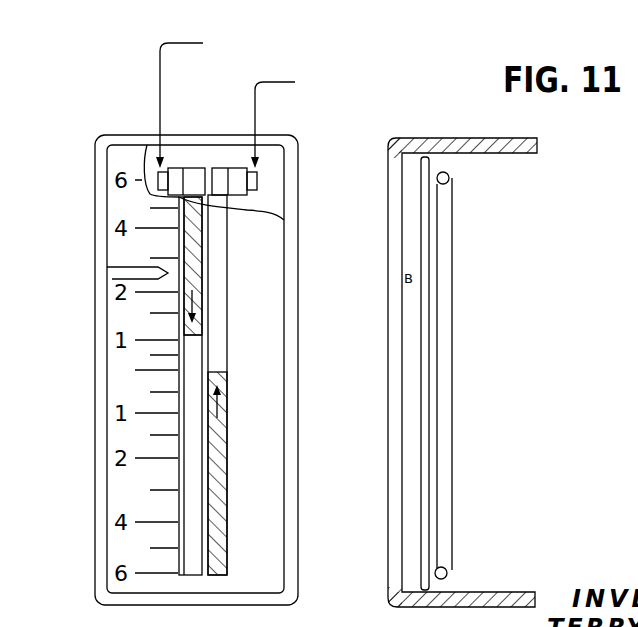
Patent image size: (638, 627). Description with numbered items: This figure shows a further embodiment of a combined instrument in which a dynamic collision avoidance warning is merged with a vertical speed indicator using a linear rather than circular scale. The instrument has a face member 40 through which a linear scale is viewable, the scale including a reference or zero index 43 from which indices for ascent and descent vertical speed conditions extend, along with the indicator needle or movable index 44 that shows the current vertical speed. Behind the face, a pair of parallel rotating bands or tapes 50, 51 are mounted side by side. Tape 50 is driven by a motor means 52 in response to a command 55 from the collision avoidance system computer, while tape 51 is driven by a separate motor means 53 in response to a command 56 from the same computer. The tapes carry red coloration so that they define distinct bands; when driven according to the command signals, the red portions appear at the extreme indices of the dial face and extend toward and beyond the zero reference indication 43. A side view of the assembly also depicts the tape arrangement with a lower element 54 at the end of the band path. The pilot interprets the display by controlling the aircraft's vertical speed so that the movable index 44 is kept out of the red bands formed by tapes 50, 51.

The face member 40 is at (96, 155).
The zero reference index 43 is at (112, 370).
The movable index 44 is at (107, 268).
The first tape 50 is at (203, 252).
The second tape 51 is at (228, 443).
The motor means 52 is at (190, 170).
The motor means 53 is at (218, 170).
The lower pin 54 is at (447, 575).
The command 55 is at (161, 44).
The command 56 is at (256, 84).